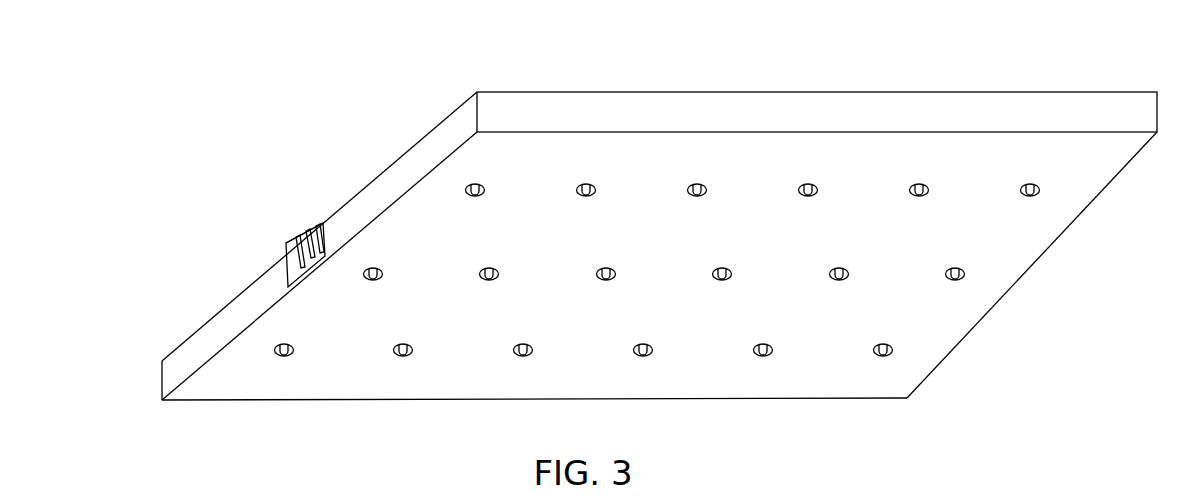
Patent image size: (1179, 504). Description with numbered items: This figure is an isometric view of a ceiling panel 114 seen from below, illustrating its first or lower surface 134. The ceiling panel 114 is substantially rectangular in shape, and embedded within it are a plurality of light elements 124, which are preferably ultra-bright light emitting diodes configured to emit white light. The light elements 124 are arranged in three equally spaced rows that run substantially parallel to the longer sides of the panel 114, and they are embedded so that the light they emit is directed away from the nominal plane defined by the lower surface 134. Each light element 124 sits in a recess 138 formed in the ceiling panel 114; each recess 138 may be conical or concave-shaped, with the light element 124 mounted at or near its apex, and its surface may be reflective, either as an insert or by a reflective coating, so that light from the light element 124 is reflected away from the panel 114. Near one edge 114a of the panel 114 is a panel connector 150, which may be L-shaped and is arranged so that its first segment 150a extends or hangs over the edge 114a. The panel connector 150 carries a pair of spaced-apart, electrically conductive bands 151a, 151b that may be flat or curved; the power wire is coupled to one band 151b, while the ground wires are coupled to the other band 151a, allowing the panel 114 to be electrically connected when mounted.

The ceiling panel 114 is at (663, 214).
The edge of the panel 114a is at (465, 122).
The first or lower surface 134 is at (1097, 165).
The recess 138 is at (410, 344).
The light element 124 is at (398, 356).
The panel connector 150 is at (321, 214).
The first segment 150a is at (325, 228).
The electrically conductive band 151a is at (297, 260).
The electrically conductive band 151b is at (319, 212).